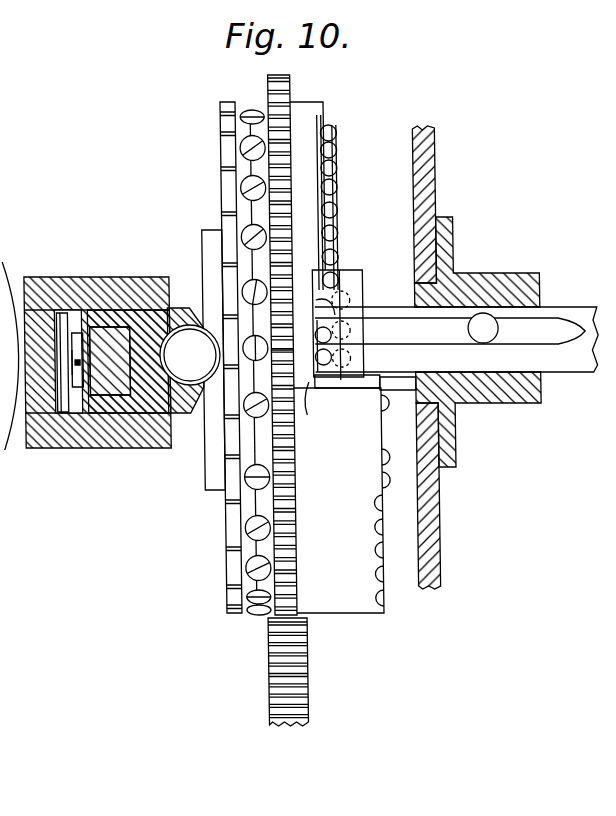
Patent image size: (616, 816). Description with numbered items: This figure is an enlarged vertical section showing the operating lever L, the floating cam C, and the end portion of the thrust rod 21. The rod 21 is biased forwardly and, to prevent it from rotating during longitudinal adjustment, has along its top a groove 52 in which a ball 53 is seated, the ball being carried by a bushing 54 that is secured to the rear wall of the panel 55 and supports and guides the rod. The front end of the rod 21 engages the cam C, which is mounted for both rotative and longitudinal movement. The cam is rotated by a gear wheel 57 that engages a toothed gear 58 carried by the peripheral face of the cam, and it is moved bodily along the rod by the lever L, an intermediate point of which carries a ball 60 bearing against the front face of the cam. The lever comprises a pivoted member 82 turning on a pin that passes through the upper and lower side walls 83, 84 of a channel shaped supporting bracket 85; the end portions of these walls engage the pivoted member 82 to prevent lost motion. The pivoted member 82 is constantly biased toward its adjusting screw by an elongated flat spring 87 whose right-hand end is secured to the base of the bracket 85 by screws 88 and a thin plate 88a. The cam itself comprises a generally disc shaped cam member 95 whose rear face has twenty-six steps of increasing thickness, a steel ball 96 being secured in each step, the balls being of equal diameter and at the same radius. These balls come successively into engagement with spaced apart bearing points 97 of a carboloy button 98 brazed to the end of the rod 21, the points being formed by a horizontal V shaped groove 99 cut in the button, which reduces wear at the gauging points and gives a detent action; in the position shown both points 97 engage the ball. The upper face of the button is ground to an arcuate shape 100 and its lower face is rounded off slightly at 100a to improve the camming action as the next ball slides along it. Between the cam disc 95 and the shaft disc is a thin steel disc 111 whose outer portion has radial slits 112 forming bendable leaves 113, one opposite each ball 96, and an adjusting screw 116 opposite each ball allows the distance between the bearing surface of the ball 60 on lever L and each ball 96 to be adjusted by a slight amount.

The push rod 21 is at (558, 364).
The groove 52 is at (539, 326).
The ball 53 is at (493, 332).
The bushing 54 is at (485, 278).
The panel 55 is at (428, 131).
The gear wheel 57 is at (293, 682).
The toothed gear 58 is at (287, 567).
The ball 60 is at (185, 340).
The pivoted member 82 is at (185, 414).
The upper side wall 83 is at (124, 287).
The lower side wall 84 is at (134, 434).
The channel shaped supporting bracket 85 is at (67, 277).
The flat spring 87 is at (54, 408).
The screws 88 is at (74, 388).
The thin plate 88a is at (66, 412).
The cam disc 95 is at (299, 103).
The steel balls 96 is at (338, 168).
The bearing points 97 is at (342, 337).
The button 98 is at (336, 376).
The V shaped groove 99 is at (338, 357).
The arcuate upper face 100 is at (335, 303).
The rounded lower face 100a is at (317, 410).
The thin steel disc 111 is at (212, 157).
The radial slits 112 is at (221, 604).
The bendable leaves 113 is at (226, 520).
The adjusting screw 116 is at (240, 188).
The floating cam C is at (323, 91).
The lever L is at (98, 262).